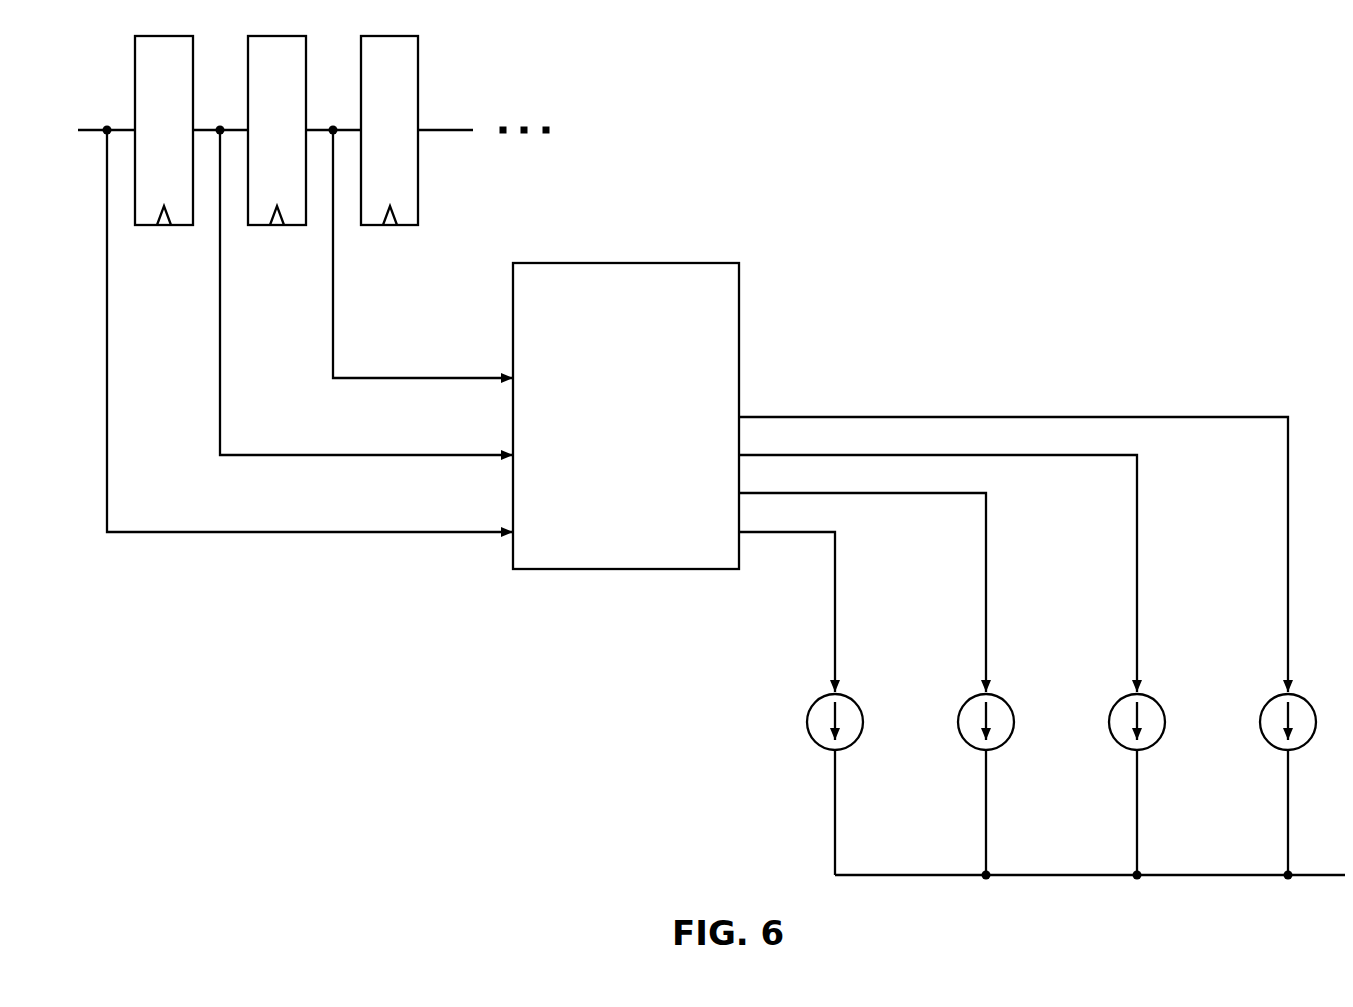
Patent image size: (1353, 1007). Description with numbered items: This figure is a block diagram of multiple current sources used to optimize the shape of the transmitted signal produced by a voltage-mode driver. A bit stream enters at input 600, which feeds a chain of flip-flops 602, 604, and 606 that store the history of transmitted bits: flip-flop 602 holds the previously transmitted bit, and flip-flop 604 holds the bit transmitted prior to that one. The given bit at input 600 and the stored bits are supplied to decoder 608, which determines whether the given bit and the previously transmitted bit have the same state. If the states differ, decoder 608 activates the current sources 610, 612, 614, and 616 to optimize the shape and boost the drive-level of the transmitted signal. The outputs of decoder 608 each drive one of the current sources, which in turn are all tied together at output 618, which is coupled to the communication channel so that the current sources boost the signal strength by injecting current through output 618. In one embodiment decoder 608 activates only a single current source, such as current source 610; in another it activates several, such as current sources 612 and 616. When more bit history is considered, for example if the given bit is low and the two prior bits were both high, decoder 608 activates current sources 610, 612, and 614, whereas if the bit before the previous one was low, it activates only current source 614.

The input 600 is at (94, 120).
The flip-flop 602 is at (164, 130).
The flip-flop 604 is at (277, 130).
The flip-flop 606 is at (389, 130).
The decoder 608 is at (626, 416).
The current source 610 is at (812, 722).
The current source 612 is at (963, 722).
The current source 614 is at (1114, 722).
The current source 616 is at (1264, 722).
The output 618 is at (1090, 861).